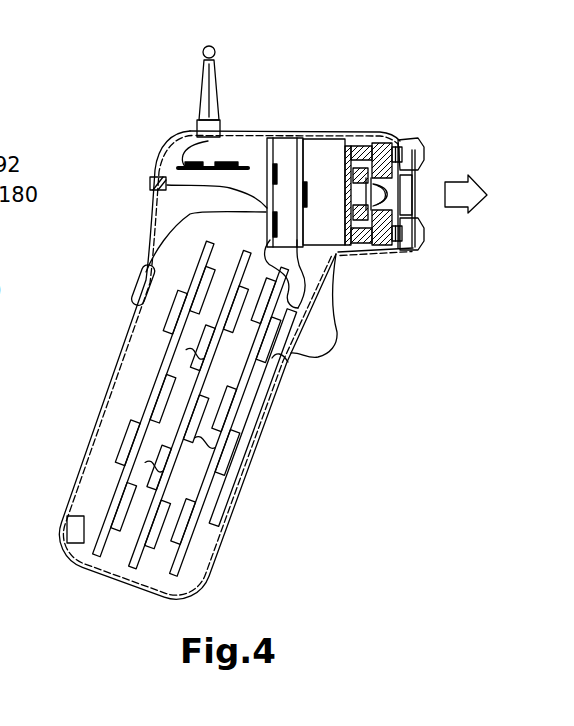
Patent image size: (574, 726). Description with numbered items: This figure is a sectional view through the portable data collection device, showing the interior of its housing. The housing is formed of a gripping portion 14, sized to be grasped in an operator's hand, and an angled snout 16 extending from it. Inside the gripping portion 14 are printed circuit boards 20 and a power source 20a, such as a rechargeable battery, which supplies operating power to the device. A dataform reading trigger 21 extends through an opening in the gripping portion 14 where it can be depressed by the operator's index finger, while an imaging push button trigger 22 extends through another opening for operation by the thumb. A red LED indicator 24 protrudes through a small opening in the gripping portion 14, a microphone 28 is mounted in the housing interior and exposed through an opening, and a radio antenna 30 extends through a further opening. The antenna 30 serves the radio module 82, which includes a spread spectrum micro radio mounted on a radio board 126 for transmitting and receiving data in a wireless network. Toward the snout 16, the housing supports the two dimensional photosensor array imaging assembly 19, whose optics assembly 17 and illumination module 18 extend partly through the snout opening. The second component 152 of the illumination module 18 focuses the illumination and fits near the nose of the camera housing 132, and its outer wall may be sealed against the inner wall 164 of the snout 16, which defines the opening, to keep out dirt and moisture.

The gripping portion 14 is at (104, 398).
The angled snout 16 is at (240, 130).
The optics assembly 17 is at (423, 200).
The illumination module 18 is at (405, 148).
The two dimensional photosensor array imaging assembly 19 is at (288, 132).
The printed circuit boards 20 is at (138, 357).
The power source 20a is at (262, 428).
The dataform reading trigger 21 is at (318, 356).
The imaging push button trigger 22 is at (140, 286).
The red light emitting diode indicator 24 is at (151, 180).
The microphone 28 is at (68, 525).
The radio antenna 30 is at (203, 80).
The radio module 82 is at (177, 144).
The spread spectrum radio board 126 is at (247, 173).
The camera housing 132 is at (370, 246).
The second component 152 is at (410, 235).
The inner wall 164 is at (396, 243).